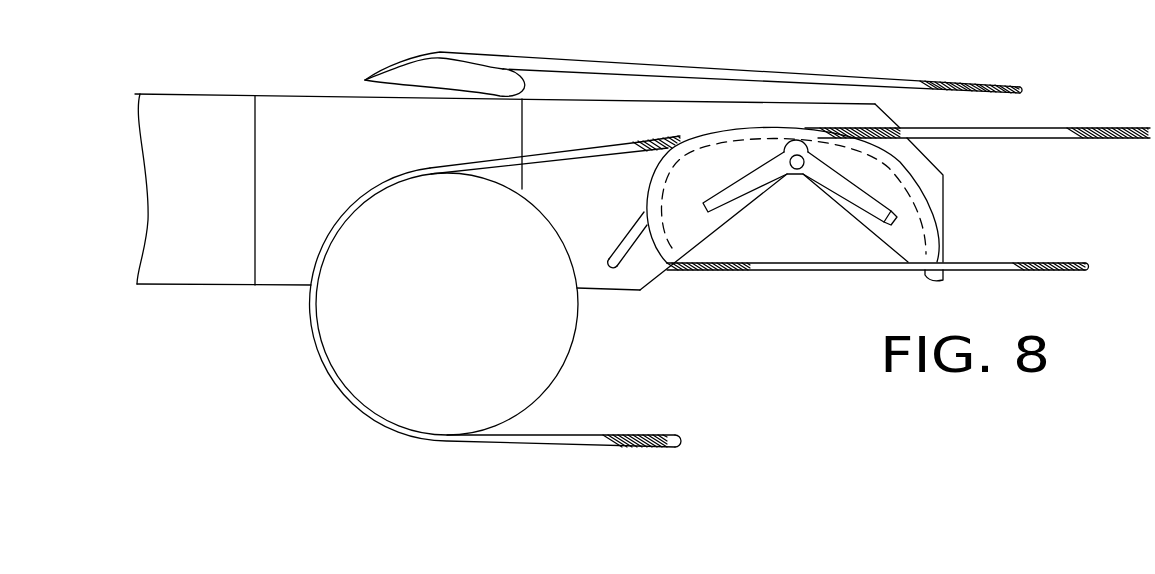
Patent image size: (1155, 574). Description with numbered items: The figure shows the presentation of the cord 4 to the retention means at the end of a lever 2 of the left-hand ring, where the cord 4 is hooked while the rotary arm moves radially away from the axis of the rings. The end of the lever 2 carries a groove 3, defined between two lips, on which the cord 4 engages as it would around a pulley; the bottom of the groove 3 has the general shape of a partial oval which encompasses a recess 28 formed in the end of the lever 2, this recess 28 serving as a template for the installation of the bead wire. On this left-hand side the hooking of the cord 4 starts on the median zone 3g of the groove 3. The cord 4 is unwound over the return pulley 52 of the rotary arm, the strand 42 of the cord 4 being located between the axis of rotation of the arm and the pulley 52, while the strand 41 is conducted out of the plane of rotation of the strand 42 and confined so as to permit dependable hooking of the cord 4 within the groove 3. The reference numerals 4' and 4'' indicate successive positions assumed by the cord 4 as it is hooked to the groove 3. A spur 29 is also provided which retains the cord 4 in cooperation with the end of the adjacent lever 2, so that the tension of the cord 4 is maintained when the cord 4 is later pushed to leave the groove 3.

The lever 2 is at (200, 266).
The return pulley 52 is at (430, 76).
The strand 41 is at (664, 146).
The cord 4 is at (977, 93).
The groove 3 is at (900, 175).
The median zone of the groove 3g is at (782, 128).
The spur 29 is at (877, 202).
The recess 28 is at (804, 236).
The cord position 4'' is at (640, 274).
The cord position 4' is at (878, 289).
The strand 42 is at (670, 446).